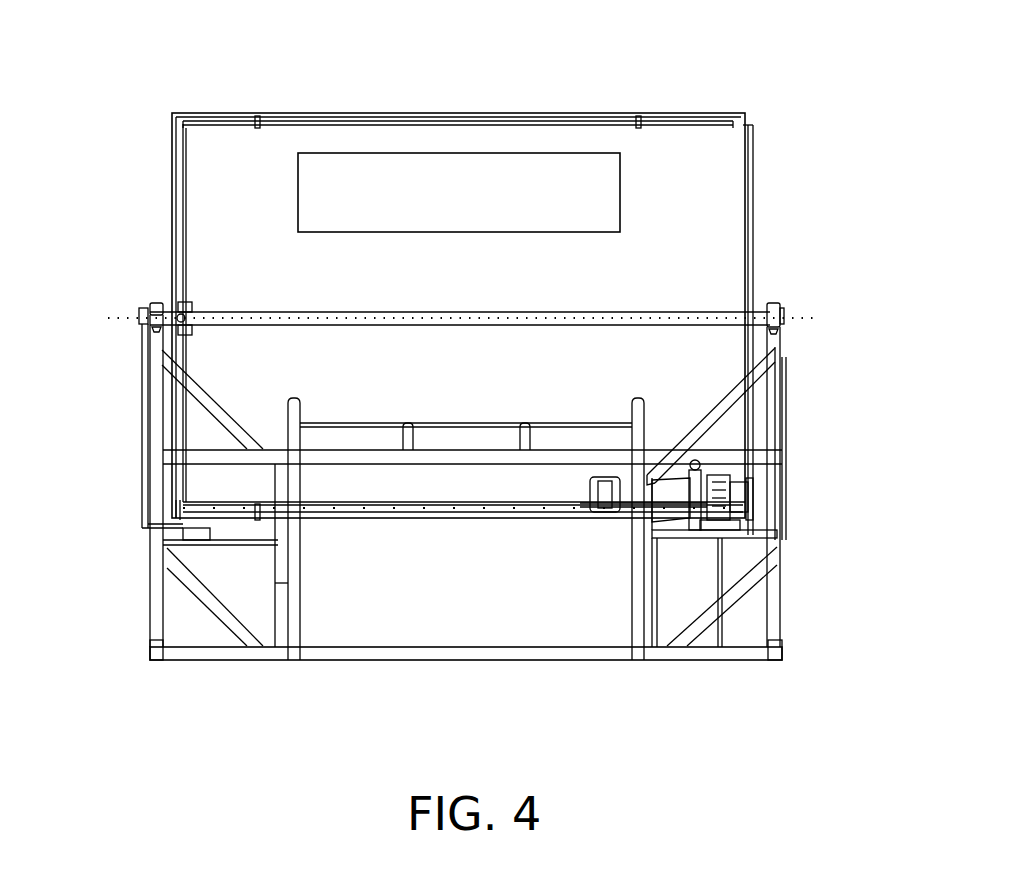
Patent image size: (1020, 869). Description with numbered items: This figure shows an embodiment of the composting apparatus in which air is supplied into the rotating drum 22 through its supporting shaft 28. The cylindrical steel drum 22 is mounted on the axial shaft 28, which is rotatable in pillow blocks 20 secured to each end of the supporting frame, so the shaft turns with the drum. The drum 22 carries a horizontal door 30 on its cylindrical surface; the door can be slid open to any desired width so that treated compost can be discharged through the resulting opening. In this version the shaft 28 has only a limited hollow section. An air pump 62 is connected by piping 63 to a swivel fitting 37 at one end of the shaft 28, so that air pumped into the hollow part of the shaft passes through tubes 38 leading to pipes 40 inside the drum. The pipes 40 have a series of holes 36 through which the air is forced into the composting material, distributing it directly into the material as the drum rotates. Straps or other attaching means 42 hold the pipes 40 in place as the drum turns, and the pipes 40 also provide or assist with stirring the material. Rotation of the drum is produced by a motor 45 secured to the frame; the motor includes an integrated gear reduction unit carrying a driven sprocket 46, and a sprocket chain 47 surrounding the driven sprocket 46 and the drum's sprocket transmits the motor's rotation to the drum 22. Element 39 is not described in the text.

The pillow blocks 20 is at (152, 305).
The drum 22 is at (200, 113).
The shaft 28 is at (760, 303).
The door 30 is at (400, 197).
The holes 36 is at (552, 123).
The swivel fitting 37 is at (140, 323).
The tubes 38 is at (180, 181).
The hinge 39 is at (192, 307).
The pipes 40 is at (322, 123).
The straps 42 is at (258, 117).
The motor 45 is at (722, 522).
The driven sprocket 46 is at (758, 472).
The sprocket chain 47 is at (757, 420).
The air pump 62 is at (200, 537).
The piping 63 is at (148, 520).